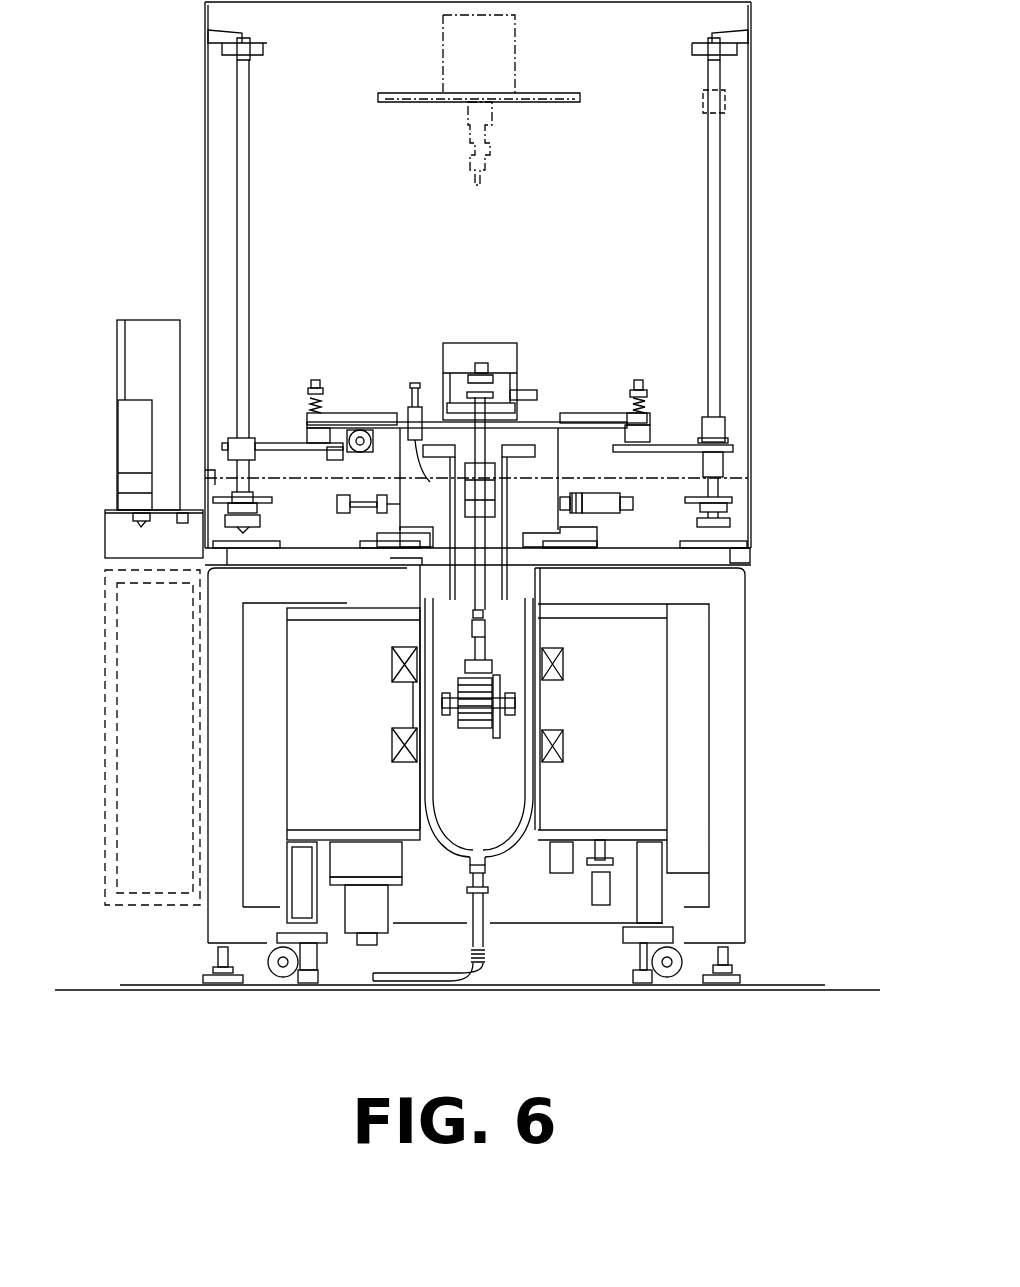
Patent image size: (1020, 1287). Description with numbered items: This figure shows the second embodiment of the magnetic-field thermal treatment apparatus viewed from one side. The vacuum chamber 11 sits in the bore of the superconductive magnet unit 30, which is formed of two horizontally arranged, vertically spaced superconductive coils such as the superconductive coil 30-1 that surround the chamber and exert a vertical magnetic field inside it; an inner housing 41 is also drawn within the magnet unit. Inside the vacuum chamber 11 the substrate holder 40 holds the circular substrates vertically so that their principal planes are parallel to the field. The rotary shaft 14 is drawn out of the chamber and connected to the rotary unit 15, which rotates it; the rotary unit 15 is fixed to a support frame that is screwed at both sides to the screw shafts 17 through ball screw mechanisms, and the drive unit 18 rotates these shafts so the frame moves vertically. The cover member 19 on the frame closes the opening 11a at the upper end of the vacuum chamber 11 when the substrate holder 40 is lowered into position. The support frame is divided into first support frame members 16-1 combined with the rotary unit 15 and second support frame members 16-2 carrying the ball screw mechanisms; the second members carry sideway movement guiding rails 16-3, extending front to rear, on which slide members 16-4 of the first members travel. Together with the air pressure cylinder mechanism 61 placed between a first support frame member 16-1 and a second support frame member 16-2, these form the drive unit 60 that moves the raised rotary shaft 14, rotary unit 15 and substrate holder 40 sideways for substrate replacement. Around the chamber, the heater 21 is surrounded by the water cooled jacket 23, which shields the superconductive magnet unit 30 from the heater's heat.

The screw shaft 17 is at (250, 178).
The drive unit 18 is at (160, 318).
The drive unit 60 is at (334, 390).
The slide member 16-4 is at (312, 395).
The air pressure cylinder mechanism 61 is at (370, 428).
The first support frame member 16-1 is at (388, 412).
The cover member 19 is at (418, 382).
The rotary unit 15 is at (478, 343).
The second support frame member 16-2 is at (270, 442).
The opening 11a is at (543, 443).
The sideway movement guiding rail 16-3 is at (318, 445).
The rotary shaft 14 is at (478, 578).
The inner housing 41 is at (508, 588).
The superconductive coil 30-1 is at (565, 663).
The superconductive magnet unit 30 is at (715, 745).
The substrate holder 40 is at (470, 738).
The water cooled jacket 23 is at (440, 880).
The heater 21 is at (455, 870).
The vacuum chamber 11 is at (482, 900).